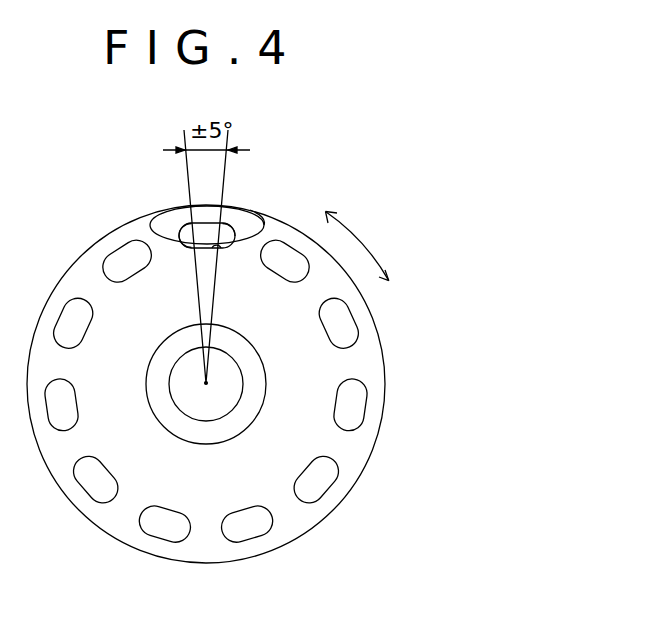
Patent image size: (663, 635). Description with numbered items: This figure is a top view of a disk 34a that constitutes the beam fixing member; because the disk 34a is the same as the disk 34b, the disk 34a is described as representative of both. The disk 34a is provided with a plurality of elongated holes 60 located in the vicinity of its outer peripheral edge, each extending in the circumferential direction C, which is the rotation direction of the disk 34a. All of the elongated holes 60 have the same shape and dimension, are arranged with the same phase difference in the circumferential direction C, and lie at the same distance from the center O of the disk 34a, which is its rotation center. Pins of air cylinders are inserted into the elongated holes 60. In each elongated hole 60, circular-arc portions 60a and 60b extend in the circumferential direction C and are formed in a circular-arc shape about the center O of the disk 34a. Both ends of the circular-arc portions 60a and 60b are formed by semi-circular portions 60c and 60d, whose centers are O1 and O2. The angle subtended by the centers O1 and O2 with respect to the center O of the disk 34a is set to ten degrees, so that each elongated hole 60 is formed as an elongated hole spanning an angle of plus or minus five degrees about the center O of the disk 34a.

The disk 34a is at (298, 374).
The disk 34b is at (206, 384).
The elongated hole 60 is at (351, 342).
The circular-arc portion 60a is at (227, 250).
The circular-arc portion 60b is at (184, 227).
The semi-circular portion 60c is at (186, 249).
The semi-circular portion 60d is at (251, 225).
The center O is at (217, 386).
The center of semi-circular portion O1 is at (156, 236).
The center of semi-circular portion O2 is at (259, 234).
The circumferential direction C is at (357, 246).